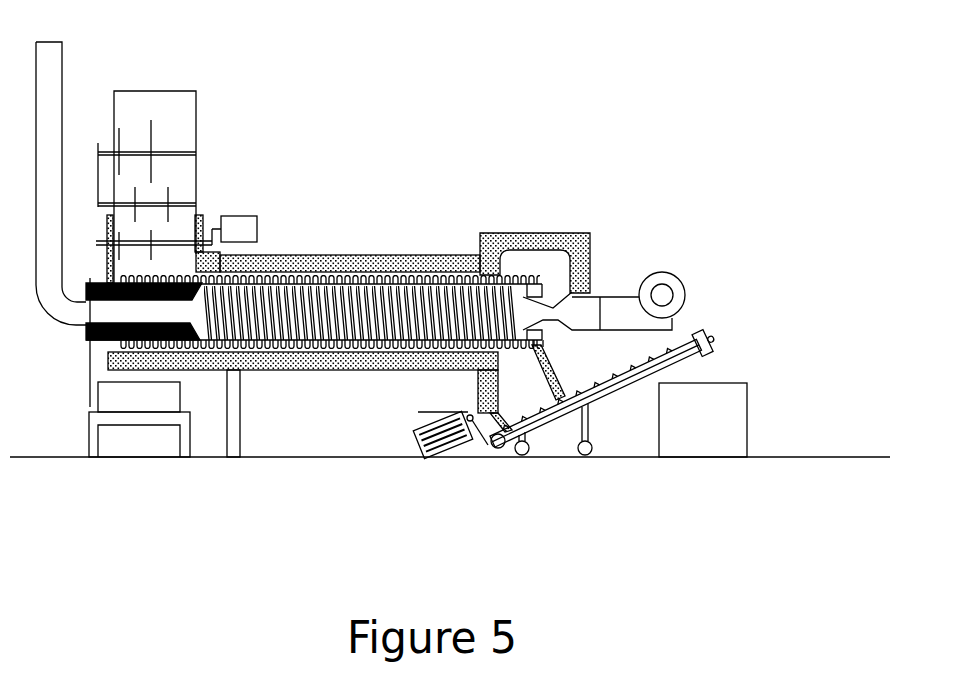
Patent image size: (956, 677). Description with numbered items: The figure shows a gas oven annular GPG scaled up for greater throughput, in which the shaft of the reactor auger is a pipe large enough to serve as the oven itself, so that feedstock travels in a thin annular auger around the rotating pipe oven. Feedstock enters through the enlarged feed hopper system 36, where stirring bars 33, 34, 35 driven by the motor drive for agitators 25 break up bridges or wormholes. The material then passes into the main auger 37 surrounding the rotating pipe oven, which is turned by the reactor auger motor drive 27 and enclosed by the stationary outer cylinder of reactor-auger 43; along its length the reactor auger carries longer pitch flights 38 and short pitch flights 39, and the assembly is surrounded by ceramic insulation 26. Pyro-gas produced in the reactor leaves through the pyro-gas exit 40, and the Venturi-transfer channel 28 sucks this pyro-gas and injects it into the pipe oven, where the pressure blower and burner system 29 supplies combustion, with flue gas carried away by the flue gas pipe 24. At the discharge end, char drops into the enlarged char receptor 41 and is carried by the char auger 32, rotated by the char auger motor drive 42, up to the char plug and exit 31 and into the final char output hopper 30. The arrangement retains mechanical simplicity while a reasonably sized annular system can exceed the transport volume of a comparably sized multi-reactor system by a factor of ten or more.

The flue gas pipe 24 is at (44, 92).
The motor drive for agitators 25 is at (238, 228).
The ceramic insulation 26 is at (90, 340).
The reactor auger motor drive 27 is at (113, 400).
The Venturi-transfer channel 28 is at (548, 288).
The pressure blower and burner system 29 is at (595, 308).
The final char output hopper 30 is at (713, 416).
The char plug and exit 31 is at (683, 363).
The char auger 32 is at (630, 380).
The stirring bar 33 is at (168, 242).
The stirring bar 34 is at (155, 202).
The stirring bar 35 is at (170, 150).
The feed hopper system 36 is at (168, 107).
The main auger 37 is at (320, 315).
The longer pitch flights of the reactor auger 38 is at (407, 284).
The reactor auger short pitch flights 39 is at (215, 355).
The pyro-gas exit 40 is at (515, 265).
The char receptor 41 is at (517, 382).
The char auger motor drive 42 is at (416, 431).
The outer cylinder of reactor-auger 43 is at (298, 270).